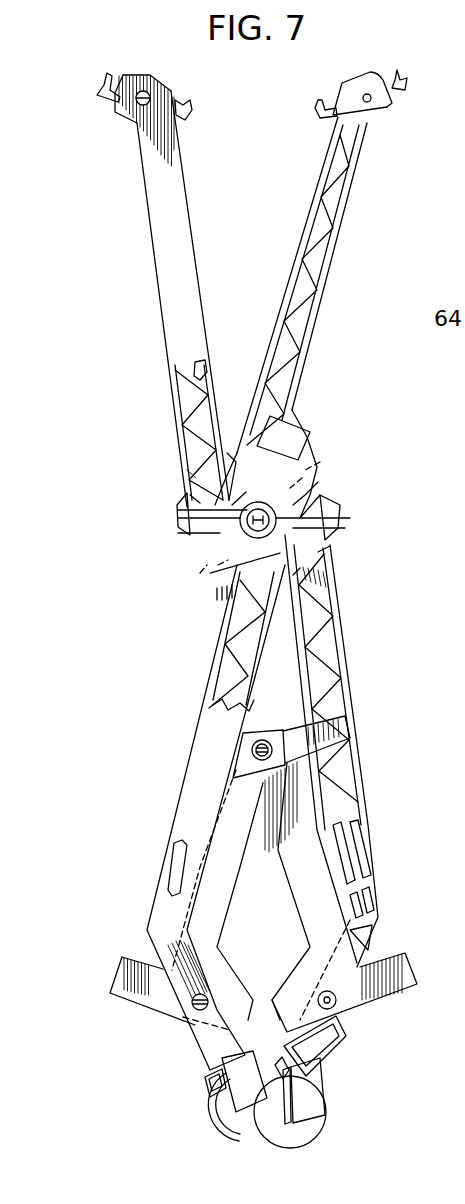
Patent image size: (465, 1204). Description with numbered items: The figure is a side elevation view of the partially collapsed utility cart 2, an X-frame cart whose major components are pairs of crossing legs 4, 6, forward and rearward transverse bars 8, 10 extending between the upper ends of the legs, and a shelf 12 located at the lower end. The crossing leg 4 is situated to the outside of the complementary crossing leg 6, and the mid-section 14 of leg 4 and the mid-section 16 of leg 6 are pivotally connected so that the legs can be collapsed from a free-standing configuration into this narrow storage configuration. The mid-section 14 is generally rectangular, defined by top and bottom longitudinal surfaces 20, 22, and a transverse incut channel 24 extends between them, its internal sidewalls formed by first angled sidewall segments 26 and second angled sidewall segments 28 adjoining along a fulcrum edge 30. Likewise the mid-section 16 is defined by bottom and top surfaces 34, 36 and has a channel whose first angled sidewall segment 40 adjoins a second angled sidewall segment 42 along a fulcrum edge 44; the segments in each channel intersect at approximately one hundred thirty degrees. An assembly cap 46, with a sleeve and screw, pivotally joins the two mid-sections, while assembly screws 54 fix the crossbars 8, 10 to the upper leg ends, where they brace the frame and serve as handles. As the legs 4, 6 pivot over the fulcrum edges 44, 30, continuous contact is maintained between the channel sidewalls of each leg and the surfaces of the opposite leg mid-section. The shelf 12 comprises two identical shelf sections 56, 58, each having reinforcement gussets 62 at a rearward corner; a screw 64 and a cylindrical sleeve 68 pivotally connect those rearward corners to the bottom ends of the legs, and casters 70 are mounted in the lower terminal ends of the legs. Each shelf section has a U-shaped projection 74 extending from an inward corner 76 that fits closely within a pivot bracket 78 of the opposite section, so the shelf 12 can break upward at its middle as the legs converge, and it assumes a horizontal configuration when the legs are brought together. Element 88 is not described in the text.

The utility cart 2 is at (165, 683).
The crossing leg 4 is at (147, 211).
The crossing leg 6 is at (335, 245).
The forward transverse bar 8 is at (378, 75).
The rearward transverse bar 10 is at (112, 103).
The shelf 12 is at (305, 756).
The mid-section of leg 4 14 is at (340, 505).
The mid-section of leg 6 16 is at (310, 438).
The top longitudinal surface 20 is at (332, 497).
The bottom longitudinal surface 22 is at (182, 527).
The transverse incut channel 24 is at (215, 553).
The first angled sidewall segment 26 is at (245, 490).
The second angled sidewall segment 28 is at (190, 495).
The fulcrum edge 30 is at (186, 513).
The bottom longitudinal surface 34 is at (318, 482).
The top longitudinal surface 36 is at (227, 453).
The first angled sidewall segment 40 is at (187, 470).
The second angled sidewall segment 42 is at (302, 478).
The fulcrum edge 44 is at (320, 462).
The assembly cap 46 is at (210, 533).
The assembly screw 54 is at (137, 108).
The shelf section 56 is at (309, 785).
The shelf section 58 is at (240, 806).
The reinforcement gussets 62 is at (117, 990).
The screw 64 is at (200, 1004).
The cylindrical sleeve 68 is at (333, 1003).
The casters 70 is at (278, 1142).
The U-shaped projection 74 is at (300, 730).
The inward corner 76 is at (272, 780).
The pivot bracket 78 is at (250, 745).
The link end 88 is at (320, 724).